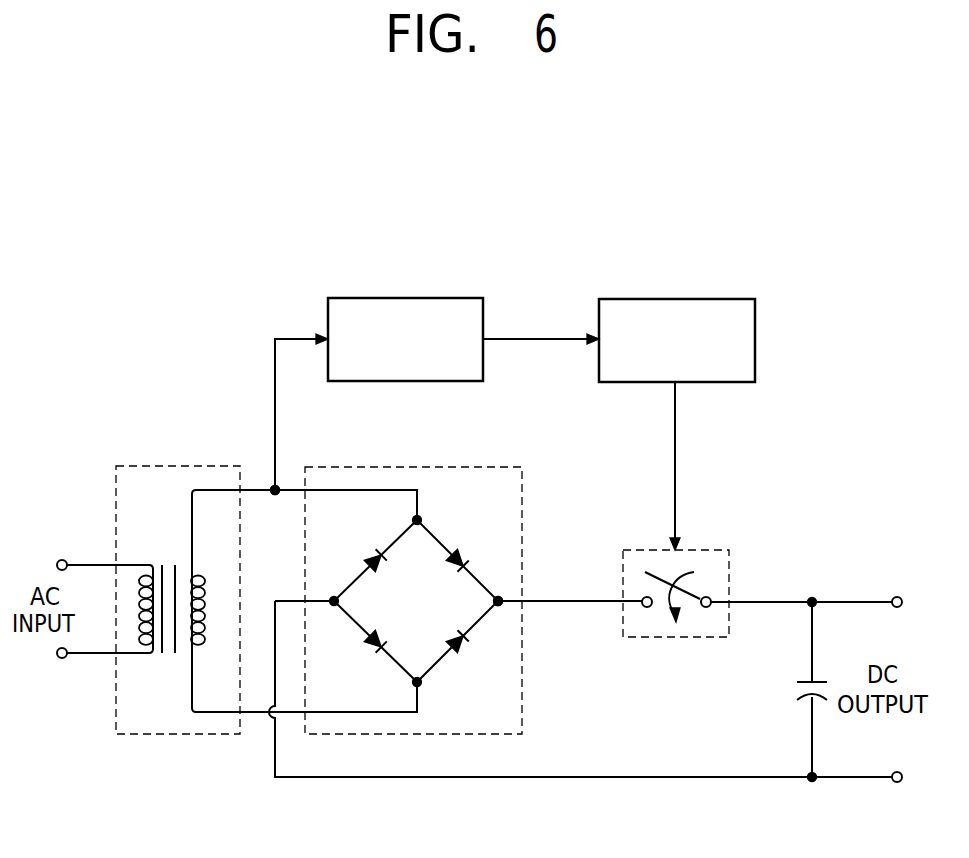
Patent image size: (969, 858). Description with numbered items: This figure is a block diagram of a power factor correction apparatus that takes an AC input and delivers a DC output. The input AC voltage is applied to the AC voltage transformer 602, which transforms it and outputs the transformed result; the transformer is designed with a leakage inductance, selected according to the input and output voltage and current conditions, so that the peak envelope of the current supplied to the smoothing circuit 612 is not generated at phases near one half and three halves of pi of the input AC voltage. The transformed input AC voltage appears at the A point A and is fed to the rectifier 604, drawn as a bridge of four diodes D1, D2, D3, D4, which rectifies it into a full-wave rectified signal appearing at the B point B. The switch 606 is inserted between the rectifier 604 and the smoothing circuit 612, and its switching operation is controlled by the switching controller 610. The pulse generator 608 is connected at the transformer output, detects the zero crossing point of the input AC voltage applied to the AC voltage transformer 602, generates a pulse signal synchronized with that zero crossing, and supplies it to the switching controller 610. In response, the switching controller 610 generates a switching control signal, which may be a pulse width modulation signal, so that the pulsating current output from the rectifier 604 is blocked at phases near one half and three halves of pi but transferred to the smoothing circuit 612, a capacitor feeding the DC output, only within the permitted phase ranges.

The AC voltage transformer 602 is at (172, 467).
The rectifier 604 is at (398, 582).
The switch 606 is at (705, 550).
The pulse generator 608 is at (408, 298).
The switching controller 610 is at (680, 299).
The smoothing circuit 612 is at (790, 690).
The A point A is at (275, 490).
The B point B is at (498, 601).
The diode D1 is at (364, 549).
The diode D2 is at (471, 549).
The diode D3 is at (364, 653).
The diode D4 is at (472, 653).